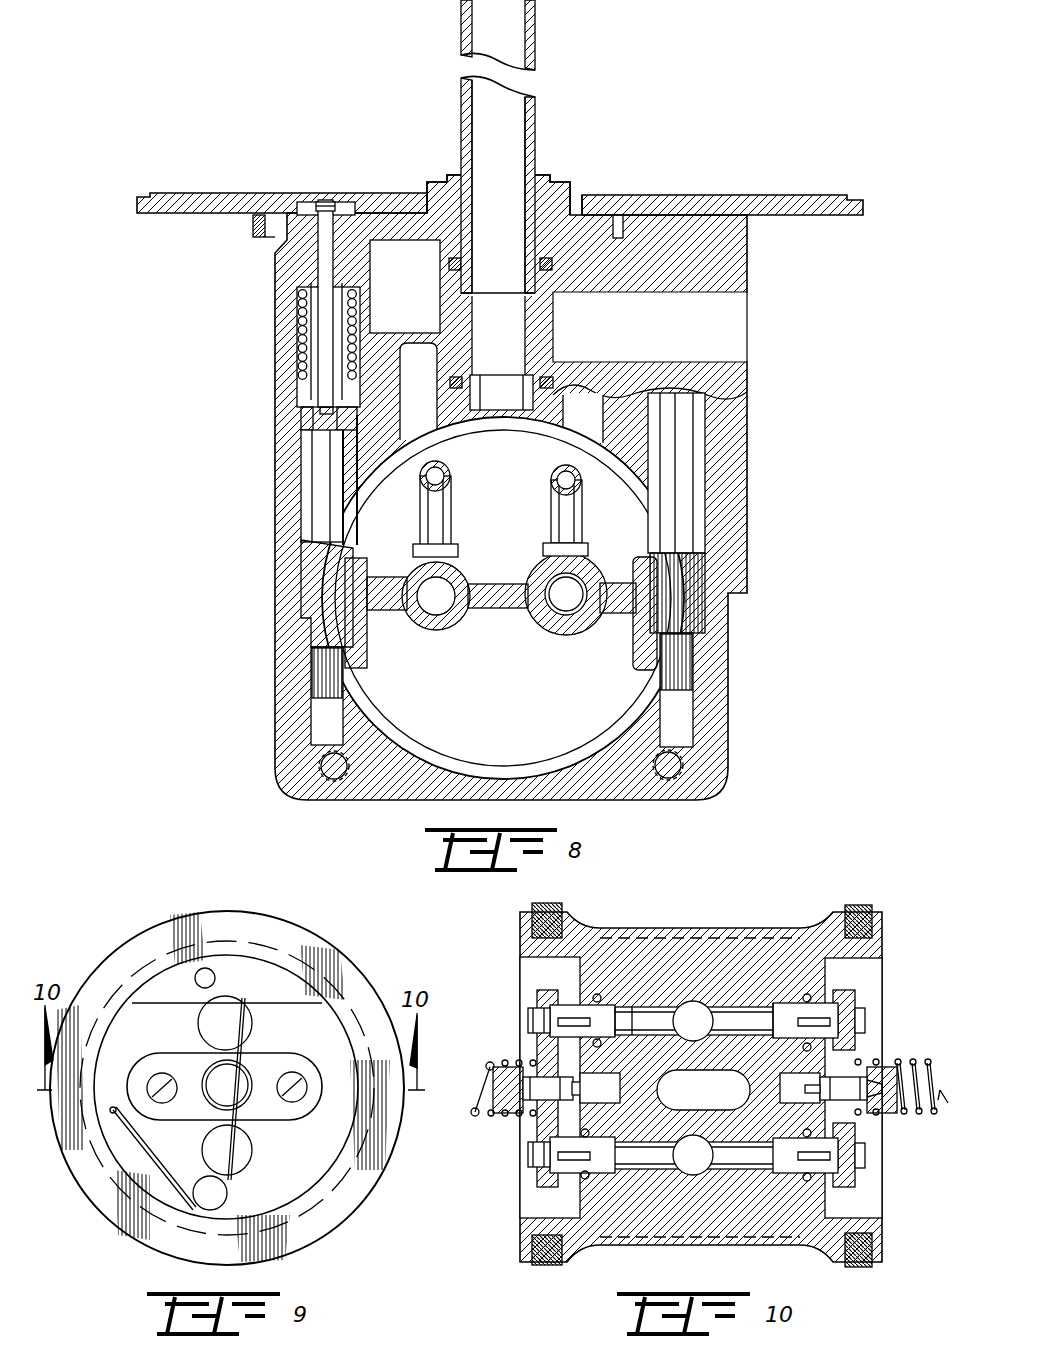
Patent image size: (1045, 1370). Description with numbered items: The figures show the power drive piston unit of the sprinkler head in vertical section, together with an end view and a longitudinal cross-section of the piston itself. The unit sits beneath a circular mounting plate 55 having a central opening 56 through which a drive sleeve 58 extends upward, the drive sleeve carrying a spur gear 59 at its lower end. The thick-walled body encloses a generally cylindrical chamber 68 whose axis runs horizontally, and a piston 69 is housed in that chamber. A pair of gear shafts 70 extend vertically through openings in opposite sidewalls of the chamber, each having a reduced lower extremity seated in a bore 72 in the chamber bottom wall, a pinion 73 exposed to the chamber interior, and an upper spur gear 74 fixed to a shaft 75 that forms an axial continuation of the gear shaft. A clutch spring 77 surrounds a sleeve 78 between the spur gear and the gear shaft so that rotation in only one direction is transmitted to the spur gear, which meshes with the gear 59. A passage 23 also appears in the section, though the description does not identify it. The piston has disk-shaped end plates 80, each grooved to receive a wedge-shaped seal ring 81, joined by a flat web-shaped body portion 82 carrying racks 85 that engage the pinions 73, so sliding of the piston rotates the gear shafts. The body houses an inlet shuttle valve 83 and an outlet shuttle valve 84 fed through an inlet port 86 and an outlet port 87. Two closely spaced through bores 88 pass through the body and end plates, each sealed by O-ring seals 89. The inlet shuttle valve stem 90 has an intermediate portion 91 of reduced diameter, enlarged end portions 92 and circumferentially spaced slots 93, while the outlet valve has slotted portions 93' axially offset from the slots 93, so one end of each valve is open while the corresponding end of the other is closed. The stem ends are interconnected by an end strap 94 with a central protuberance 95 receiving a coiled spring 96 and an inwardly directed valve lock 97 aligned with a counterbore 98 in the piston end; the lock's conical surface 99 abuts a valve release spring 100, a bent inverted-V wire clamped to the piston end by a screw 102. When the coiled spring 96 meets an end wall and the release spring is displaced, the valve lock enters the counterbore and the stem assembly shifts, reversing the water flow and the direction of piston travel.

In FIG. 8, the passage 23 is at (748, 364).
In FIG. 8, the mounting plate 55 is at (692, 195).
In FIG. 8, the central opening 56 is at (583, 200).
In FIG. 8, the drive sleeve 58 is at (537, 120).
In FIG. 8, the spur gear 59 is at (432, 182).
In FIG. 8, the cylindrical chamber 68 is at (515, 778).
In FIG. 8, the piston 69 is at (593, 740).
In FIG. 8, the gear shafts 70 is at (312, 468).
In FIG. 8, the bore 72 is at (688, 722).
In FIG. 8, the pinion 73 is at (311, 610).
In FIG. 8, the upper spur gear 74 is at (255, 232).
In FIG. 8, the shaft 75 is at (325, 295).
In FIG. 8, the clutch spring 77 is at (300, 322).
In FIG. 8, the sleeve 78 is at (310, 400).
In FIG. 9, the end plates 80 is at (290, 970).
In FIG. 10, the end plates 80 is at (522, 1225).
In FIG. 10, the seal ring 81 is at (535, 1265).
In FIG. 8, the body portion 82 is at (478, 608).
In FIG. 10, the body portion 82 is at (680, 1000).
In FIG. 10, the inlet shuttle valve 83 is at (607, 1008).
In FIG. 10, the outlet shuttle valve 84 is at (620, 1173).
In FIG. 8, the racks 85 is at (350, 622).
In FIG. 10, the racks 85 is at (613, 1248).
In FIG. 8, the inlet port 86 is at (551, 505).
In FIG. 10, the inlet port 86 is at (670, 1007).
In FIG. 8, the outlet port 87 is at (450, 486).
In FIG. 10, the outlet port 87 is at (708, 1170).
In FIG. 8, the through bores 88 is at (427, 626).
In FIG. 10, the O-ring seals 89 is at (590, 1005).
In FIG. 10, the inlet shuttle valve stem 90 is at (720, 998).
In FIG. 10, the intermediate portion 91 is at (632, 1003).
In FIG. 10, the enlarged end portions 92 is at (777, 1007).
In FIG. 10, the slots 93 is at (724, 992).
In FIG. 10, the slotted portions 93' is at (694, 1164).
In FIG. 9, the end strap 94 is at (263, 1120).
In FIG. 10, the end strap 94 is at (535, 1123).
In FIG. 10, the protuberance 95 is at (488, 1058).
In FIG. 10, the coiled spring 96 is at (475, 1110).
In FIG. 10, the valve lock 97 is at (527, 1070).
In FIG. 10, the counterbore 98 is at (807, 1100).
In FIG. 10, the conical surface 99 is at (822, 1070).
In FIG. 9, the valve release spring 100 is at (143, 1143).
In FIG. 10, the valve release spring 100 is at (540, 1080).
In FIG. 9, the screw 102 is at (292, 1103).